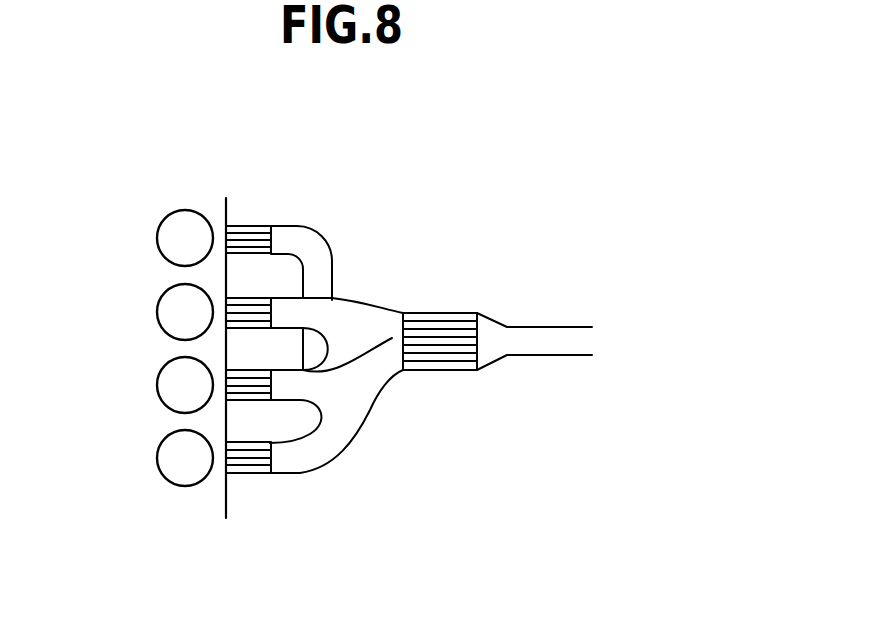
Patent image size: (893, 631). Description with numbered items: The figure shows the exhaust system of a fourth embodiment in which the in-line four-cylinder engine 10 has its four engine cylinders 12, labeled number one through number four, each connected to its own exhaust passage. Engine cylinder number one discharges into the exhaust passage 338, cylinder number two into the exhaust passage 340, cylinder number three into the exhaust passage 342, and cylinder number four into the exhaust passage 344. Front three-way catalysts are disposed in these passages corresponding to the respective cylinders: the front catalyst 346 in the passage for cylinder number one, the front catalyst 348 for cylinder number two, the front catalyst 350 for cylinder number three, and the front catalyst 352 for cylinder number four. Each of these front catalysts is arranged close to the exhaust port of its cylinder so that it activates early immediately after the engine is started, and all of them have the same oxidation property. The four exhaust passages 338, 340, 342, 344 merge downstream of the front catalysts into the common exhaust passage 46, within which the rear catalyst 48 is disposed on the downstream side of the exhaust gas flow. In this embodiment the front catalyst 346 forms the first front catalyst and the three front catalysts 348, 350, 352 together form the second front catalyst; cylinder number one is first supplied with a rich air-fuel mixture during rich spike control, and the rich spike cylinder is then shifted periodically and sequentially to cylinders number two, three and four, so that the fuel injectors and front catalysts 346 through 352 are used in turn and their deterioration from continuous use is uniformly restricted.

The engine 10 is at (213, 203).
The engine cylinder 12 is at (157, 250).
The common exhaust passage 46 is at (392, 338).
The rear catalyst 48 is at (450, 327).
The exhaust passage 338 is at (313, 447).
The exhaust passage 340 is at (310, 375).
The exhaust passage 342 is at (283, 312).
The exhaust passage 344 is at (313, 248).
The front three-way catalyst 346 is at (253, 468).
The front three-way catalyst 348 is at (253, 388).
The front three-way catalyst 350 is at (257, 307).
The front three-way catalyst 352 is at (242, 230).